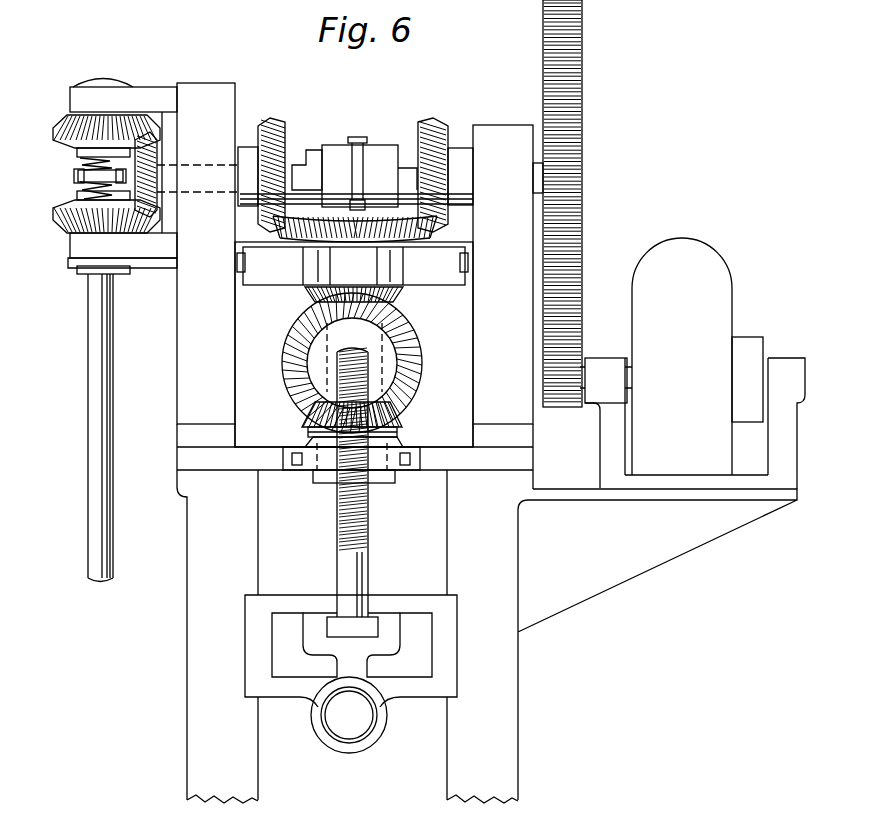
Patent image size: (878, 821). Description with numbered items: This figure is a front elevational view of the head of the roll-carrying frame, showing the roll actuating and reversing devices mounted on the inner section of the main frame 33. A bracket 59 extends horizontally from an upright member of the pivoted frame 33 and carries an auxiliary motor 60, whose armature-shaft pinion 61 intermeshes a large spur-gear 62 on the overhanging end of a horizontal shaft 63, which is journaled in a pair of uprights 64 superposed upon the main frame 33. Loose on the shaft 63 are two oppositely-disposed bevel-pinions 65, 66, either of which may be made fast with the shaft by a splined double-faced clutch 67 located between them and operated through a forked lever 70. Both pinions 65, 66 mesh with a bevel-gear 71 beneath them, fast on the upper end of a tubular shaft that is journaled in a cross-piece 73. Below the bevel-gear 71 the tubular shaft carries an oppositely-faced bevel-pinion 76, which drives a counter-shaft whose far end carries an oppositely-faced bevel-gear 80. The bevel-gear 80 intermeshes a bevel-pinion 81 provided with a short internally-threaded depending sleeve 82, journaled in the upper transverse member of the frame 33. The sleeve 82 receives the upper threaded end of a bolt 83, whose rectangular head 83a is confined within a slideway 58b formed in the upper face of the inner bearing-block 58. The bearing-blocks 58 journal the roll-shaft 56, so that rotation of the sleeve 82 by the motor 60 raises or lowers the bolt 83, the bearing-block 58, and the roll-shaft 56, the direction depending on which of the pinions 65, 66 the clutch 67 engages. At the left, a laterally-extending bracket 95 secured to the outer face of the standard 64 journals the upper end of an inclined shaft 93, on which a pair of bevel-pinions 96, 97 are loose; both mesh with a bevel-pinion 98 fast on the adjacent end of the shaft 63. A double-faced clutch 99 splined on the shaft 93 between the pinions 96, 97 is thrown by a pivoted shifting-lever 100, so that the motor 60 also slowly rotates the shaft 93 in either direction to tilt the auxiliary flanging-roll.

The main frame 33 is at (355, 625).
The roll-shaft 56 is at (350, 730).
The bearing-block 58 is at (422, 692).
The slideway 58b is at (382, 627).
The bracket 59 is at (661, 579).
The auxiliary motor 60 is at (694, 356).
The pinion 61 is at (563, 405).
The spur-gear 62 is at (577, 106).
The horizontal shaft 63 is at (308, 153).
The upright 64 is at (355, 286).
The bevel-pinion 65 is at (430, 123).
The bevel-pinion 66 is at (268, 122).
The double-faced clutch 67 is at (377, 150).
The forked lever 70 is at (357, 140).
The bevel-gear 71 is at (297, 240).
The cross-piece 73 is at (352, 266).
The bevel-pinion 76 is at (403, 298).
The bevel-gear 80 is at (410, 395).
The bevel-pinion 81 is at (307, 418).
The sleeve 82 is at (320, 473).
The bolt 83 is at (362, 553).
The rectangular head 83a is at (338, 623).
The inclined shaft 93 is at (93, 408).
The bracket 95 is at (143, 252).
The bevel-pinion 96 is at (62, 122).
The bevel-pinion 97 is at (55, 222).
The bevel-pinion 98 is at (143, 167).
The double-faced clutch 99 is at (78, 190).
The shifting-lever 100 is at (74, 176).